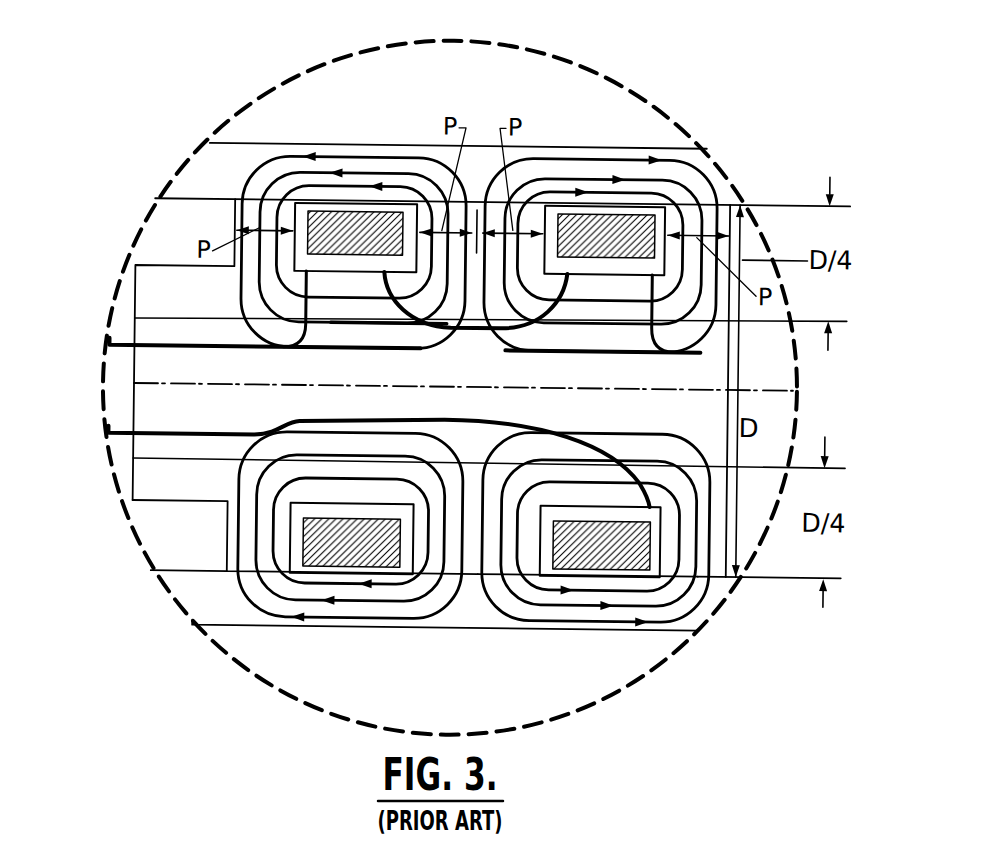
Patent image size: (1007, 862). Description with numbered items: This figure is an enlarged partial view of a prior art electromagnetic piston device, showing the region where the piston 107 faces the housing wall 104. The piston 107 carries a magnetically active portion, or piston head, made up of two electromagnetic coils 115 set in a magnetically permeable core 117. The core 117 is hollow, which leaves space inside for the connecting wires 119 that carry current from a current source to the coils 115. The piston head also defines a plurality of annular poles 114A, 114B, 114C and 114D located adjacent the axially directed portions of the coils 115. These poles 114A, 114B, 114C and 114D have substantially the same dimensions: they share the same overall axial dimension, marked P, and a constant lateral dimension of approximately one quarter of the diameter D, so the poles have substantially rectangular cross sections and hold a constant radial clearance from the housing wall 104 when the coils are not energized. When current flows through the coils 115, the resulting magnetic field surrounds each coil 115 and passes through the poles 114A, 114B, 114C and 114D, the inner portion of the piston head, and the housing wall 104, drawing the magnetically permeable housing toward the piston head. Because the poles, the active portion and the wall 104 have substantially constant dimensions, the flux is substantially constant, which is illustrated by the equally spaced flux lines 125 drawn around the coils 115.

The housing wall 104 is at (721, 178).
The piston 107 is at (718, 361).
The annular pole 114A is at (700, 562).
The annular pole 114B is at (512, 579).
The annular pole 114C is at (434, 560).
The annular pole 114D is at (229, 562).
The electromagnetic coil 115 is at (315, 215).
The magnetically permeable core 117 is at (183, 489).
The connecting wires 119 is at (123, 432).
The flux lines 125 is at (390, 154).